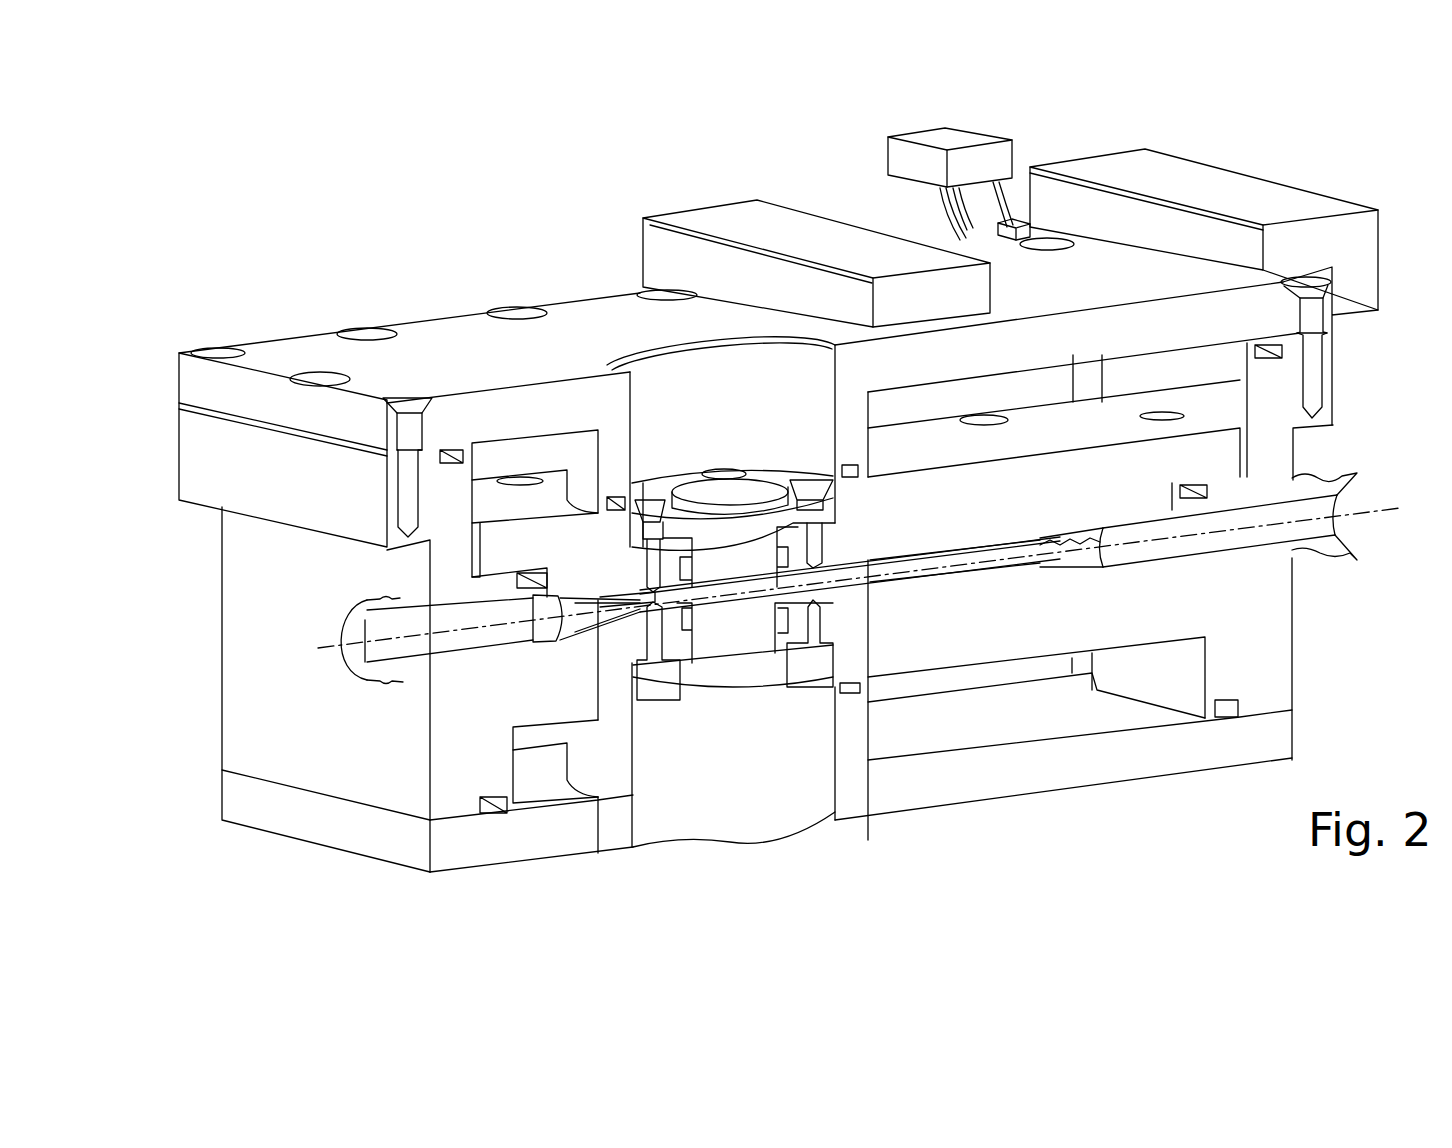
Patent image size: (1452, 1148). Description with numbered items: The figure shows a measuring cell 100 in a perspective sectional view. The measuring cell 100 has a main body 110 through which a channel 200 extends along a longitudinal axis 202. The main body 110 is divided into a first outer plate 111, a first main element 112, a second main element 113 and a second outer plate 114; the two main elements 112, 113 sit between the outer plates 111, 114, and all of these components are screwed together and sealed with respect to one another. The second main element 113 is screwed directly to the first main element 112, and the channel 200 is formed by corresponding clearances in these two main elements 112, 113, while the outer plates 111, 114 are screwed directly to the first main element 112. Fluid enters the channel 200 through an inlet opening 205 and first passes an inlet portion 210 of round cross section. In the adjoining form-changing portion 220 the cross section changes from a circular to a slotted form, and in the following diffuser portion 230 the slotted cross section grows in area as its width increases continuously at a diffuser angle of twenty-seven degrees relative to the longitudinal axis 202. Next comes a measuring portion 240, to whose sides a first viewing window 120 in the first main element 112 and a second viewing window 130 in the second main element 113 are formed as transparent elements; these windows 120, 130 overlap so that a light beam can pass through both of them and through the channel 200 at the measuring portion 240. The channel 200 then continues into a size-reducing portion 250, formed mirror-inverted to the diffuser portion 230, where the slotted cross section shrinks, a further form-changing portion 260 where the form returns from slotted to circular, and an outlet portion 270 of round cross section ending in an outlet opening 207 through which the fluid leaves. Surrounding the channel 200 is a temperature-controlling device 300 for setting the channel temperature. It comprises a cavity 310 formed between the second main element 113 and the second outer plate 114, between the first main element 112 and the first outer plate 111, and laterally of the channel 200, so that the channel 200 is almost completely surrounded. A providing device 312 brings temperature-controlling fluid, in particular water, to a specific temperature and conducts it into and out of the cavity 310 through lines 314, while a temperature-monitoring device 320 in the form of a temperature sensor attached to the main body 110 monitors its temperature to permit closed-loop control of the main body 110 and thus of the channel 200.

The measuring cell 100 is at (360, 305).
The main body 110 is at (245, 660).
The first outer plate 111 is at (913, 778).
The first main element 112 is at (1032, 623).
The second main element 113 is at (1223, 465).
The second outer plate 114 is at (1138, 268).
The first viewing window 120 is at (722, 657).
The second viewing window 130 is at (740, 535).
The channel 200 is at (848, 587).
The longitudinal axis 202 is at (333, 643).
The inlet opening 205 is at (367, 660).
The outlet opening 207 is at (1373, 522).
The inlet portion 210 is at (453, 642).
The form-changing portion 220 is at (595, 628).
The diffuser portion 230 is at (660, 610).
The measuring portion 240 is at (737, 600).
The size-reducing portion 250 is at (943, 577).
The further form-changing portion 260 is at (1070, 560).
The outlet portion 270 is at (1207, 545).
The temperature-controlling device 300 is at (1278, 386).
The cavity 310 is at (508, 460).
The providing device 312 is at (960, 130).
The lines 314 is at (965, 216).
The temperature-monitoring device 320 is at (1035, 222).